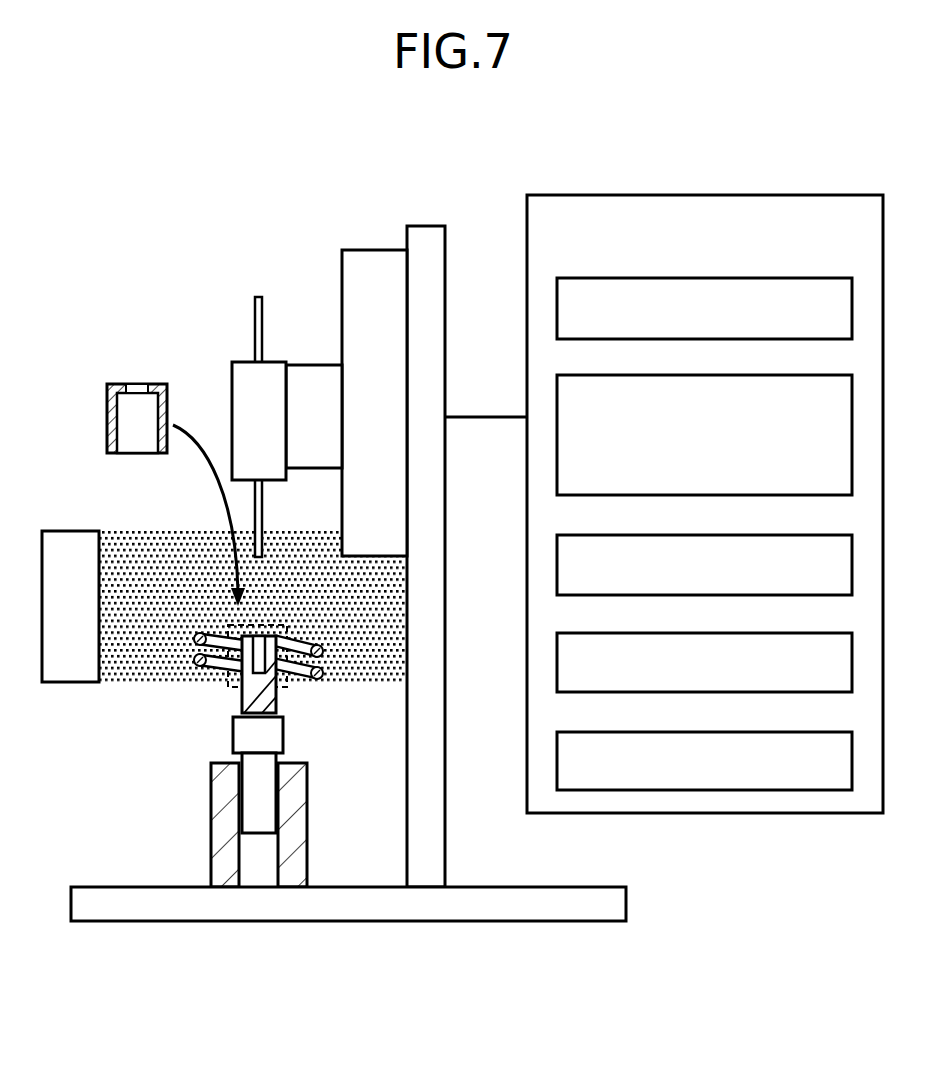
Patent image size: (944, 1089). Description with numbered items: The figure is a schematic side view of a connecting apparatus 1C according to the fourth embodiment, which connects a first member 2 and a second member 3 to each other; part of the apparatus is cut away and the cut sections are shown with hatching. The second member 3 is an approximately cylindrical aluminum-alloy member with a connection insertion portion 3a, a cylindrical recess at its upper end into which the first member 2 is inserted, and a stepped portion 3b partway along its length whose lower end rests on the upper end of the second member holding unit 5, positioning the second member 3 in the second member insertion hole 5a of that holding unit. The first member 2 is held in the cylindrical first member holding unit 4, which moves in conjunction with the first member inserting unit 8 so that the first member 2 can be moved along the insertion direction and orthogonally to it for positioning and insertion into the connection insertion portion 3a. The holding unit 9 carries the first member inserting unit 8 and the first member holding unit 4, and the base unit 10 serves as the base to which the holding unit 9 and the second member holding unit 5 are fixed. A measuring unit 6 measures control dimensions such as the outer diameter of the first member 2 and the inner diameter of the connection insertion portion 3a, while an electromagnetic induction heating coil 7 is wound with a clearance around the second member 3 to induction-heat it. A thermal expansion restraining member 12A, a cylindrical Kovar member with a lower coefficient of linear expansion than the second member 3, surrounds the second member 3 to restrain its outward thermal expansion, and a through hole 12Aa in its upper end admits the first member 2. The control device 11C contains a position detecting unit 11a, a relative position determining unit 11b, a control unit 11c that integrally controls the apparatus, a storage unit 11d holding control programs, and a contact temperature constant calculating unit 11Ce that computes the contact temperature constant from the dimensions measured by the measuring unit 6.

The connecting apparatus 1C is at (497, 164).
The first member 2 is at (250, 308).
The second member 3 is at (233, 715).
The connection insertion portion 3a is at (258, 637).
The stepped portion 3b is at (233, 740).
The first member holding unit 4 is at (232, 377).
The second member holding unit 5 is at (211, 818).
The second member insertion hole 5a is at (278, 790).
The measuring unit 6 is at (68, 531).
The electromagnetic induction heating coil 7 is at (181, 665).
The first member inserting unit 8 is at (373, 250).
The holding unit 9 is at (445, 264).
The base unit 10 is at (545, 887).
The control device 11C is at (796, 195).
The position detecting unit 11a is at (796, 278).
The contact temperature constant calculating unit 11Ce is at (796, 375).
The relative position determining unit 11b is at (796, 535).
The control unit 11c is at (796, 633).
The storage unit 11d is at (796, 732).
The thermal expansion restraining member 12A is at (111, 383).
The through hole 12Aa is at (143, 383).